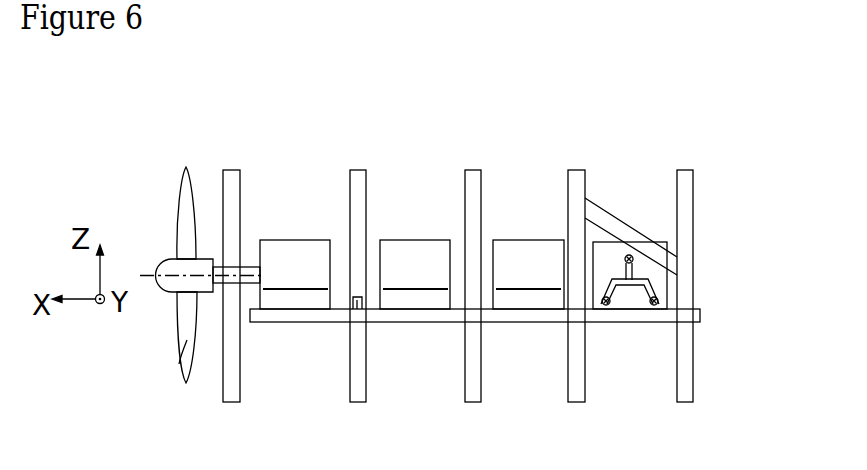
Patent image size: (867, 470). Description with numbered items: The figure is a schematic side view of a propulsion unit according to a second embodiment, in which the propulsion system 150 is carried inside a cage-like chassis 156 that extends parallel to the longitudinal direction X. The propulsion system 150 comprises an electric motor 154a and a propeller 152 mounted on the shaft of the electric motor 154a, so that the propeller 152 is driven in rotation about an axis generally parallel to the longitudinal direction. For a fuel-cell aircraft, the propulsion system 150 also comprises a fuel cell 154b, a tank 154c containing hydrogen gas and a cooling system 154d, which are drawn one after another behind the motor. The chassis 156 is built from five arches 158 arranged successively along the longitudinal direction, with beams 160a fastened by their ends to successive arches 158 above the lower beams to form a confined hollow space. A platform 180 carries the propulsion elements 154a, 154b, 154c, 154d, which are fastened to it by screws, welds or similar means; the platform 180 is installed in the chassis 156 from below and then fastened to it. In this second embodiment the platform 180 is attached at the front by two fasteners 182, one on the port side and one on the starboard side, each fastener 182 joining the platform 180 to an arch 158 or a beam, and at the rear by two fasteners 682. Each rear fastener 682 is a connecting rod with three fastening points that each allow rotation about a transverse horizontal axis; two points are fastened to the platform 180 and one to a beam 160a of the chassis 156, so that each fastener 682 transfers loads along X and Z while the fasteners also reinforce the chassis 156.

The propulsion system 150 is at (755, 207).
The propeller 152 is at (185, 345).
The electric motor 154a is at (295, 274).
The fuel cell 154b is at (415, 274).
The tank 154c is at (528, 274).
The cooling system 154d is at (658, 288).
The chassis 156 is at (713, 160).
The arch 158 is at (225, 200).
The beam 160a is at (595, 213).
The platform 180 is at (420, 313).
The fastener 182 is at (356, 311).
The fastener 682 is at (632, 285).